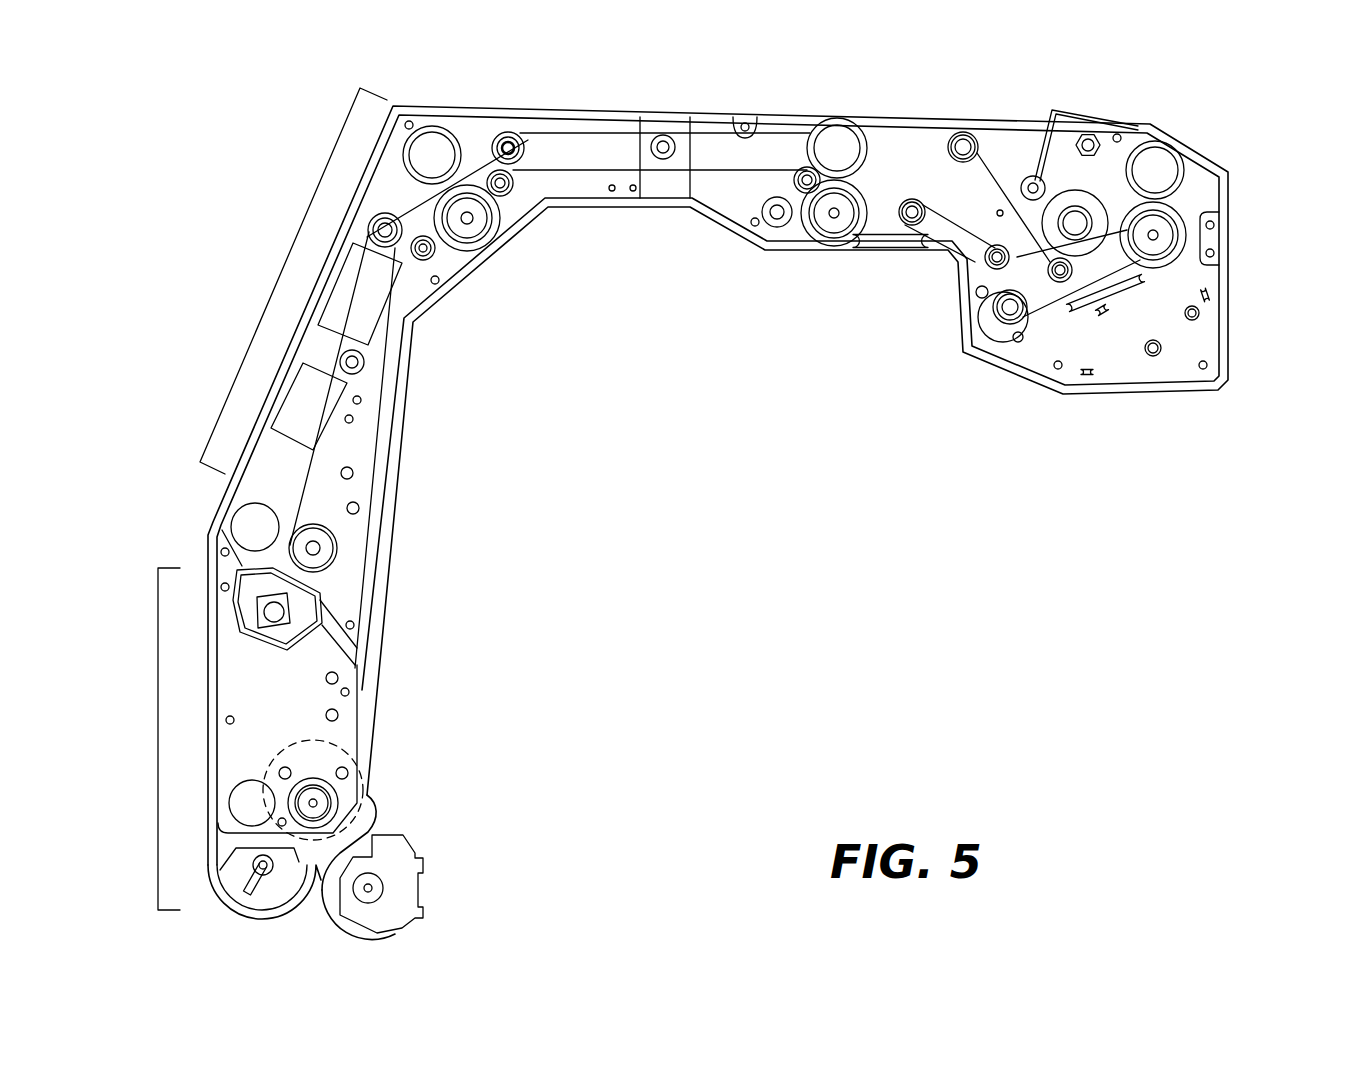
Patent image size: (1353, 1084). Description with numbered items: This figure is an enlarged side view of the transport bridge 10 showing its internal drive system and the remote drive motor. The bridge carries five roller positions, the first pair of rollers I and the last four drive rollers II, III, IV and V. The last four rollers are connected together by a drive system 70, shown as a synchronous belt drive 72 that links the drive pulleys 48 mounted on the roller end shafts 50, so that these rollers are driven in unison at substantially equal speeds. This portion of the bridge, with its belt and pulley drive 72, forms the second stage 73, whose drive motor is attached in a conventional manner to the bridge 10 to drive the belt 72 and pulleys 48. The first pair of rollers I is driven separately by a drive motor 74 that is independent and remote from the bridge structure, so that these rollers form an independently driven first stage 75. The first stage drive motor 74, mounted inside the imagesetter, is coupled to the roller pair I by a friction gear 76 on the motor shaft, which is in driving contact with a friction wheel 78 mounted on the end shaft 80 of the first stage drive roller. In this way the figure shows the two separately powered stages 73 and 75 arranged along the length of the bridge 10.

The bridge 10 is at (252, 167).
The drive pulleys 48 is at (470, 240).
The roller end shafts 50 is at (467, 222).
The drive system 70 is at (932, 263).
The synchronous belt drive 72 is at (364, 437).
The second stage 73 is at (289, 274).
The drive motor 74 is at (393, 888).
The first stage 75 is at (158, 730).
The friction gear 76 is at (334, 903).
The friction wheel 78 is at (368, 828).
The end shaft 80 is at (316, 803).
The first pair of rollers I is at (250, 805).
The drive roller II is at (255, 527).
The drive roller III is at (432, 152).
The drive roller IV is at (837, 148).
The drive roller V is at (1157, 172).